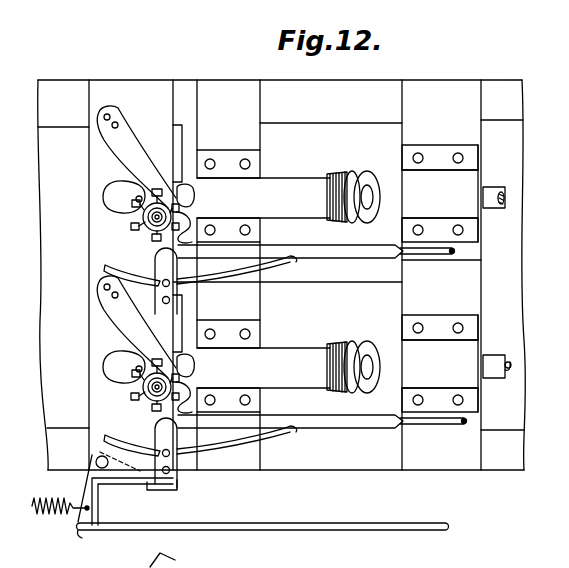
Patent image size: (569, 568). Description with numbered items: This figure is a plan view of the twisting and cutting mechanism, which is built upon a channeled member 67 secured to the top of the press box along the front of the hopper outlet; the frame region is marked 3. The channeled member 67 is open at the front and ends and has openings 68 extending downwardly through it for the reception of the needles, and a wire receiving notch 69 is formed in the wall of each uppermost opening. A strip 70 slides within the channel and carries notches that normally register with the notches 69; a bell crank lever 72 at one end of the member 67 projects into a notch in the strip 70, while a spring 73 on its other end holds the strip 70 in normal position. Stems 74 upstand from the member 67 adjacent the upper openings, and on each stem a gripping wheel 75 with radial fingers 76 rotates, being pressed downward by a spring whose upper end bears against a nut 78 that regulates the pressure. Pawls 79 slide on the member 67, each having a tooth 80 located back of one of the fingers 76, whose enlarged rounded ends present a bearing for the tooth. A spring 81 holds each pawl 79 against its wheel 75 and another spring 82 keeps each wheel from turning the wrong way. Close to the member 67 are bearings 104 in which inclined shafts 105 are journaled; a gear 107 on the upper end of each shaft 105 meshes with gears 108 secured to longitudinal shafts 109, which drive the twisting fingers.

The frame casing 3 is at (509, 470).
The channeled member 67 is at (89, 303).
The openings 68 is at (119, 183).
The wire receiving notch 69 is at (150, 189).
The strip 70 is at (172, 490).
The bell crank lever 72 is at (95, 505).
The spring 73 is at (50, 516).
The stems 74 is at (140, 216).
The gripping wheel 75 is at (178, 226).
The radial fingers 76 is at (150, 239).
The nut 78 is at (136, 199).
The pawls 79 is at (337, 251).
The tooth 80 is at (174, 242).
The spring 81 is at (217, 280).
The spring 82 is at (143, 150).
The bearings 104 is at (289, 190).
The inclined shafts 105 is at (187, 190).
The gear 107 is at (338, 176).
The gears 108 is at (363, 175).
The longitudinal shafts 109 is at (493, 192).